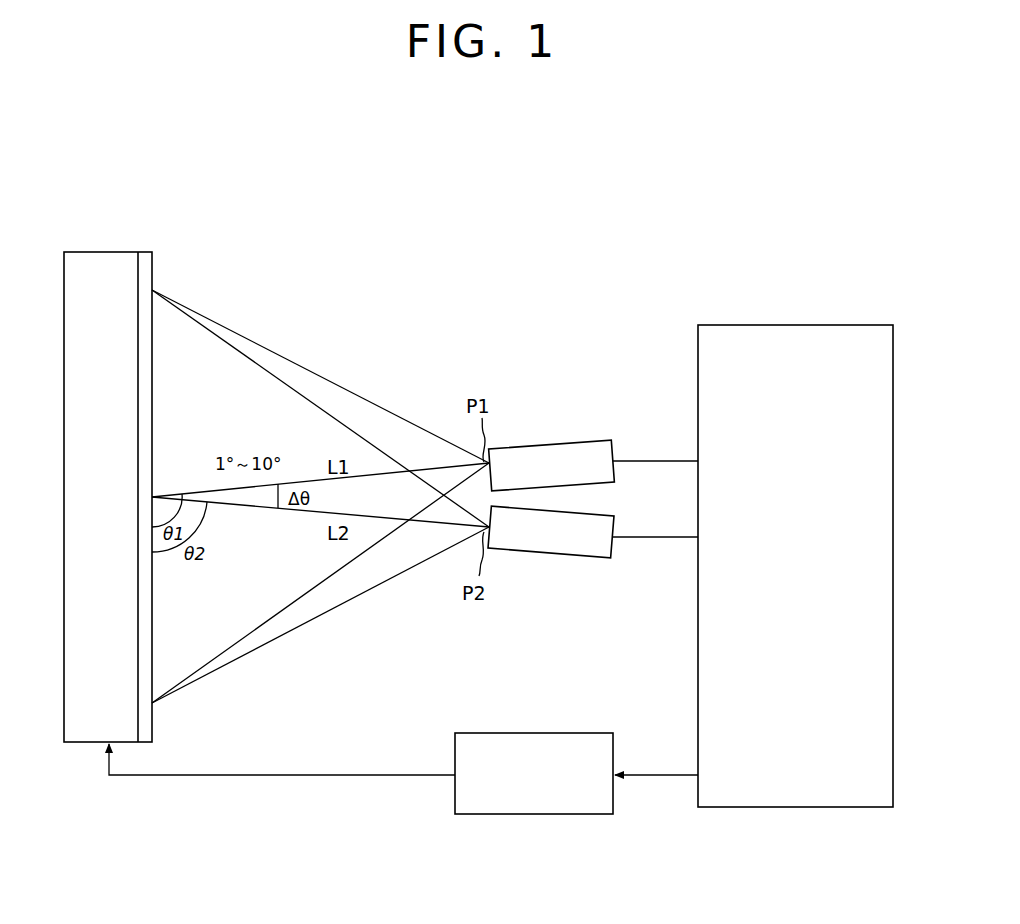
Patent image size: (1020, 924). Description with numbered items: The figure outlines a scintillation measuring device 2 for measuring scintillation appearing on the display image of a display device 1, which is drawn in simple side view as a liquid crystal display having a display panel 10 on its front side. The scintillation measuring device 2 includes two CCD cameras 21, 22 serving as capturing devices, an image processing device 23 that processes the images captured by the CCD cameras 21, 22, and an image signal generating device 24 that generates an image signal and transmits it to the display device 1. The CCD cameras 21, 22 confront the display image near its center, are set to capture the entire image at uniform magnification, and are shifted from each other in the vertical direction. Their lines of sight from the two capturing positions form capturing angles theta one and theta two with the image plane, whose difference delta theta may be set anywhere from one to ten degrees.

The display device 1 is at (147, 463).
The display panel 10 is at (147, 267).
The scintillation measuring device 2 is at (658, 247).
The CCD camera 21 is at (593, 442).
The CCD camera 22 is at (590, 560).
The image processing device 23 is at (790, 325).
The image signal generating device 24 is at (535, 733).